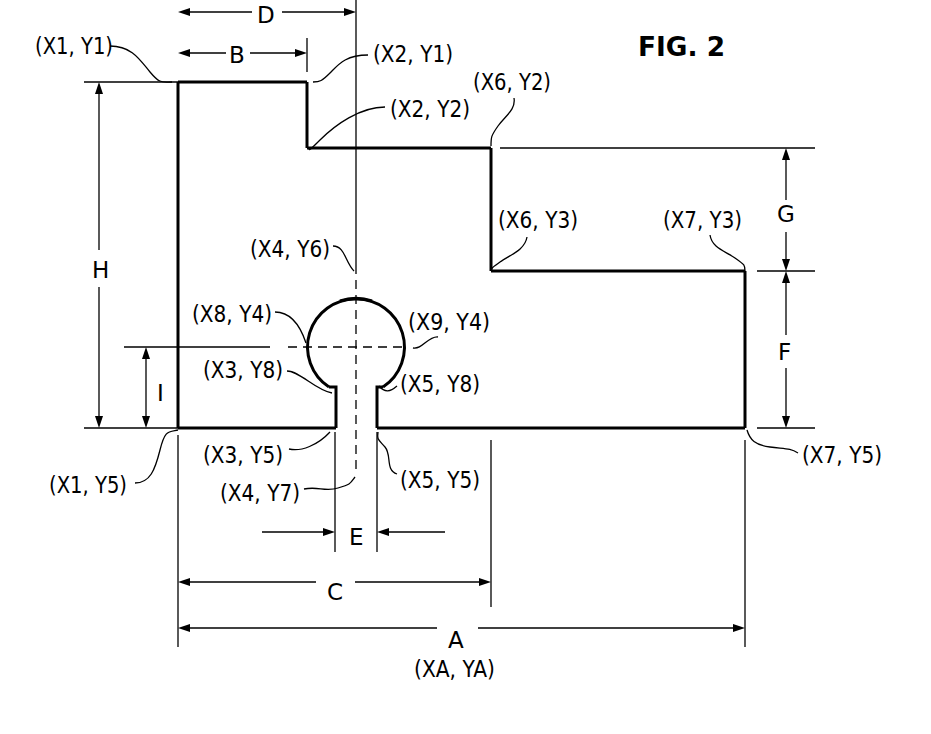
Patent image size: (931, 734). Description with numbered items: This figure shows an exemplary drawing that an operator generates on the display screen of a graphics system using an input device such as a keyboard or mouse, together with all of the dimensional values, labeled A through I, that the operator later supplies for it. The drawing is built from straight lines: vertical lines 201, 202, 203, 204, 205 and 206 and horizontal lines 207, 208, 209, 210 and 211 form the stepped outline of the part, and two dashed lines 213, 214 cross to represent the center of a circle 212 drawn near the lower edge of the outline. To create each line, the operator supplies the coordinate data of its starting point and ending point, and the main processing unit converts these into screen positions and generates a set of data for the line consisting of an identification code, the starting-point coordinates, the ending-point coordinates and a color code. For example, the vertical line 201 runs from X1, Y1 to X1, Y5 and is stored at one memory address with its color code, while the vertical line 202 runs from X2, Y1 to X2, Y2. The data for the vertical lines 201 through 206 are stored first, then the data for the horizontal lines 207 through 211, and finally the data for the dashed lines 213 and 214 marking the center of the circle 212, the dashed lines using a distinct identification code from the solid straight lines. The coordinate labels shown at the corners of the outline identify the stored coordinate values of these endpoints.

The vertical line 201 is at (178, 212).
The vertical line 202 is at (306, 141).
The vertical line 203 is at (491, 205).
The vertical line 204 is at (745, 350).
The vertical line 205 is at (333, 413).
The vertical line 206 is at (379, 415).
The horizontal line 207 is at (240, 86).
The horizontal line 208 is at (425, 153).
The horizontal line 209 is at (625, 273).
The horizontal line 210 is at (240, 425).
The horizontal line 211 is at (620, 425).
The circle 212 is at (358, 298).
The dashed line 213 is at (340, 320).
The dashed line 214 is at (378, 347).